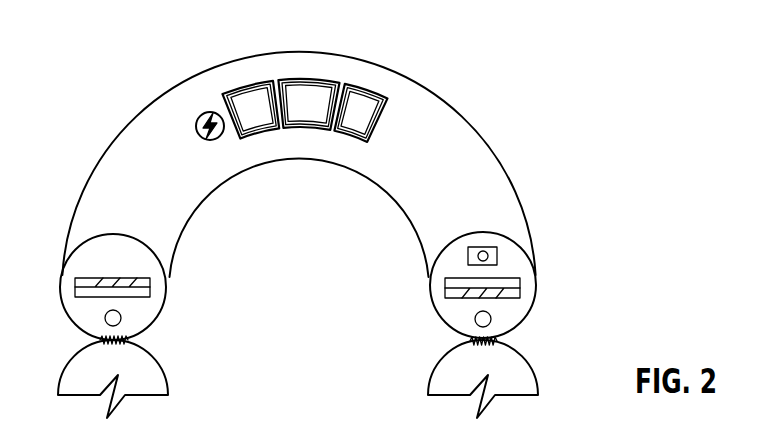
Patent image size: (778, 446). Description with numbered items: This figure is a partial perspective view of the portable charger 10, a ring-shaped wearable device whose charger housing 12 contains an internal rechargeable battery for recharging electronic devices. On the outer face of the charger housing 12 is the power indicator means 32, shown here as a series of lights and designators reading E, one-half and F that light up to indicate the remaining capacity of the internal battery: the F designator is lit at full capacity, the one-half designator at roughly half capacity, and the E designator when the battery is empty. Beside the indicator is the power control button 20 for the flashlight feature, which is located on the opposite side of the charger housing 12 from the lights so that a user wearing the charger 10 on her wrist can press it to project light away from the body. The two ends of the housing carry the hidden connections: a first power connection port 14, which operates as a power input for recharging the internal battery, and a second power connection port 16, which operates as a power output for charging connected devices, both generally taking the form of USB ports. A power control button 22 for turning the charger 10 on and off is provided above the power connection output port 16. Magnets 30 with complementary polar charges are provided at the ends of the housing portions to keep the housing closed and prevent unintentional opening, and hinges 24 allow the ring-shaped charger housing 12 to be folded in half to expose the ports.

The portable charger 10 is at (324, 227).
The charger housing 12 is at (112, 173).
The first power connection port 14 is at (156, 289).
The second power connection port 16 is at (520, 288).
The power control button 20 is at (196, 107).
The power control button 22 is at (497, 258).
The hinges 24 is at (149, 344).
The magnets 30 is at (105, 321).
The power indicator means 32 is at (359, 75).